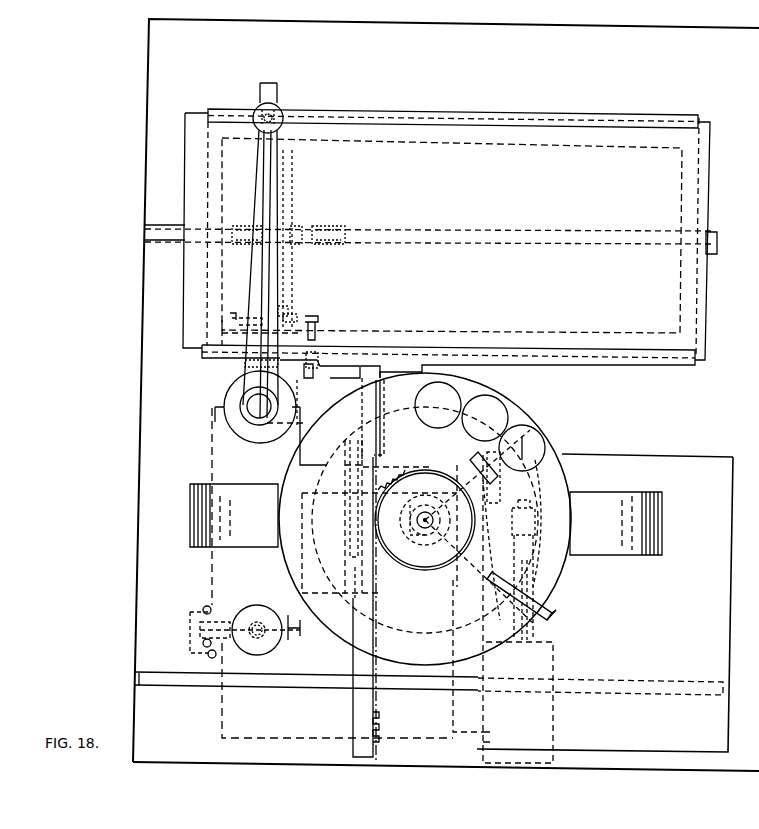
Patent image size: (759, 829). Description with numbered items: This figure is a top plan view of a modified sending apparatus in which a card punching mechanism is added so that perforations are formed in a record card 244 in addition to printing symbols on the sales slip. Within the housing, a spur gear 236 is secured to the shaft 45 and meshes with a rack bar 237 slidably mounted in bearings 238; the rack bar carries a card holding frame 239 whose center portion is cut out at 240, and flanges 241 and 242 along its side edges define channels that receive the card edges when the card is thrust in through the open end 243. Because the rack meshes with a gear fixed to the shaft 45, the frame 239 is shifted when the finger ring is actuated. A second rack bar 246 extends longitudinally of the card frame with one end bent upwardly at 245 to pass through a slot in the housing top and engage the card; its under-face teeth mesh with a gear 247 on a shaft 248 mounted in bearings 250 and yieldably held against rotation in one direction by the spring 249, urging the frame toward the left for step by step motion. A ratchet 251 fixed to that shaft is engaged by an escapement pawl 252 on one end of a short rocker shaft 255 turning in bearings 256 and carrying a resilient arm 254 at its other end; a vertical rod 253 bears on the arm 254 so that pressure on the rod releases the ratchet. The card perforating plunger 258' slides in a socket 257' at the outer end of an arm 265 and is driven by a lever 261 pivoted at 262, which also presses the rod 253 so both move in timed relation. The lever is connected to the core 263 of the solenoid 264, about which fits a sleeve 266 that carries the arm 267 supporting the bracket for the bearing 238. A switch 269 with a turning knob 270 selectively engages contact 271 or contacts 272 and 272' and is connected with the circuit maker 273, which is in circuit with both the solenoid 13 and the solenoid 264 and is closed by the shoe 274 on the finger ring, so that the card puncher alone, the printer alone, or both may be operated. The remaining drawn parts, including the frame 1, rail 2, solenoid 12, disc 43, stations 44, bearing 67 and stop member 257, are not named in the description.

The machine frame 1 is at (446, 395).
The guide rail 2 is at (164, 681).
The solenoid 12 is at (540, 571).
The solenoid 13 is at (503, 609).
The rotary disc 43 is at (563, 579).
The numbered stations 44 is at (527, 437).
The shaft 45 is at (425, 521).
The shaft bearing 67 is at (414, 517).
The spur gear 236 is at (434, 470).
The rack bar 237 is at (352, 661).
The bearings 238 is at (385, 445).
The card holding frame 239 is at (615, 360).
The cut out center portion 240 is at (452, 235).
The flange 241 is at (668, 351).
The flange 242 is at (435, 128).
The open end 243 is at (205, 114).
The card 244 is at (176, 230).
The upwardly bent end 245 is at (713, 240).
The rack bar 246 is at (408, 238).
The gear 247 is at (300, 235).
The shaft 248 is at (278, 258).
The spring 249 is at (283, 278).
The bearings 250 is at (284, 310).
The ratchet 251 is at (299, 314).
The escapement pawl 252 is at (314, 318).
The rod 253 is at (262, 365).
The arm 254 is at (297, 368).
The rocker shaft 255 is at (315, 353).
The bearings 256 is at (300, 336).
The stop member 257 is at (205, 309).
The socket 257' is at (304, 98).
The card perforating plunger 258' is at (235, 96).
The lever 261 is at (265, 174).
The pivot 262 is at (265, 89).
The core or plunger 263 is at (250, 407).
The solenoid 264 is at (235, 413).
The arm 265 is at (278, 196).
The sleeve 266 is at (245, 394).
The arm 267 is at (322, 398).
The switch 269 is at (221, 623).
The turning knob 270 is at (278, 643).
The contact 271 is at (204, 607).
The contact 272 is at (183, 642).
The contact 272' is at (197, 662).
The circuit maker 273 is at (497, 512).
The abutment lug or shoe 274 is at (500, 470).